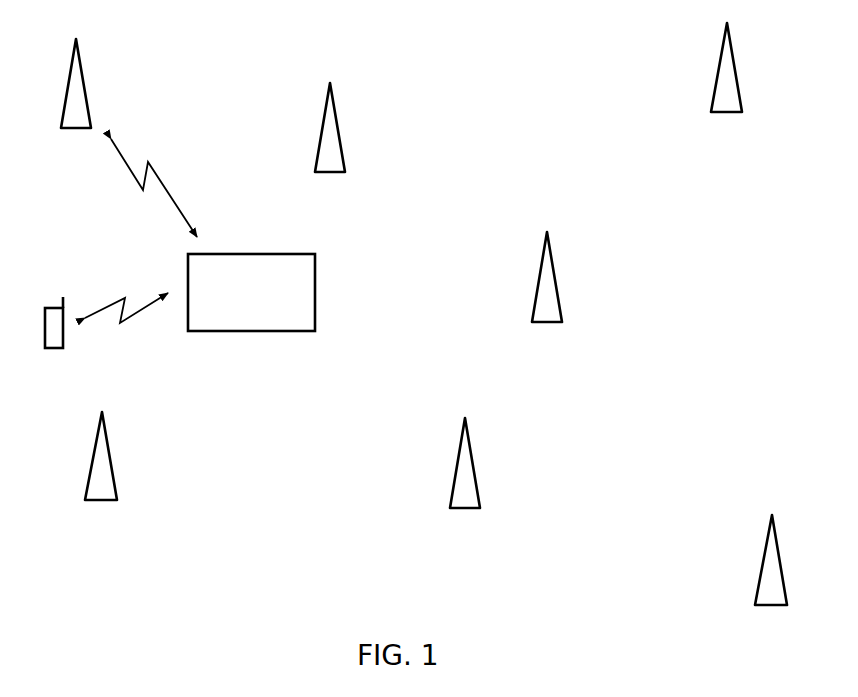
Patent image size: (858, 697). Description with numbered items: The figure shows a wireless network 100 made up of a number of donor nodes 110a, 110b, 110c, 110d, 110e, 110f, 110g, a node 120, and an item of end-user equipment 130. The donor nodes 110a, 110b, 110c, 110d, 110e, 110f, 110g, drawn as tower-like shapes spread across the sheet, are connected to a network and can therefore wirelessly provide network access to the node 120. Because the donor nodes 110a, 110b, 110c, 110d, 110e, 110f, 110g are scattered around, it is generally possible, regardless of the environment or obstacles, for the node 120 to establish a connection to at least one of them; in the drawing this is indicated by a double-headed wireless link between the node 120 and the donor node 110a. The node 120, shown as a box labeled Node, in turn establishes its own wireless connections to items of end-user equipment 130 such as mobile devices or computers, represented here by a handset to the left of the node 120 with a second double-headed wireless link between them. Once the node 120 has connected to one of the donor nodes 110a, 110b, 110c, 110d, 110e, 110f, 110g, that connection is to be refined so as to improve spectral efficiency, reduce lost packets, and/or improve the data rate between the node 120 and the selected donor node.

The wireless network 100 is at (241, 559).
The donor node 110a is at (82, 80).
The donor node 110b is at (340, 142).
The donor node 110c is at (557, 282).
The donor node 110d is at (718, 72).
The donor node 110e is at (763, 560).
The donor node 110f is at (473, 462).
The donor node 110g is at (113, 472).
The node 120 is at (317, 302).
The end-user equipment 130 is at (53, 308).